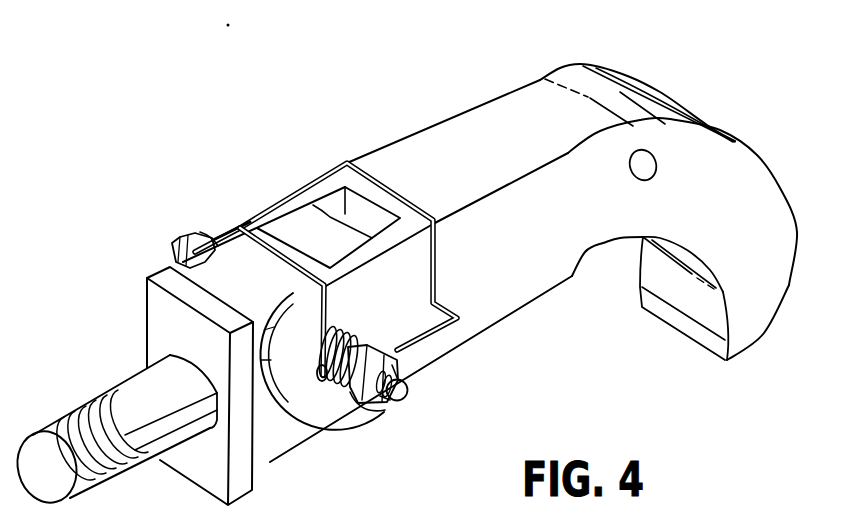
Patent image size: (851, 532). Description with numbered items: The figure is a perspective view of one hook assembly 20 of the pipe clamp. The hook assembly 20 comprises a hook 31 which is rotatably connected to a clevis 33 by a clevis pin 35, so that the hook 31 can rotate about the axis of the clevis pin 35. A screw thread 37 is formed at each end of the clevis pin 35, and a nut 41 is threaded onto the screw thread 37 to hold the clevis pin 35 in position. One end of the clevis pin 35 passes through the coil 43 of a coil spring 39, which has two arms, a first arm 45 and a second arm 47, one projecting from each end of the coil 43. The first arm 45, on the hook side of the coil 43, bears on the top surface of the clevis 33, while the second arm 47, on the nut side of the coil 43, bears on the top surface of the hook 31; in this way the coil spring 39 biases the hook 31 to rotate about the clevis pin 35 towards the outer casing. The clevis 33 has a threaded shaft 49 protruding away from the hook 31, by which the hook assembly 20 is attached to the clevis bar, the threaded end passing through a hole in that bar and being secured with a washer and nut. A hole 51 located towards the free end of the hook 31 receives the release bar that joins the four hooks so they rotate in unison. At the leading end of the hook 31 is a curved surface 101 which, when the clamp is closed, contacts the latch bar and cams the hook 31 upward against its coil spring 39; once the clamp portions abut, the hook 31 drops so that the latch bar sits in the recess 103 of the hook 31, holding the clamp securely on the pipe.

The hook assembly 20 is at (448, 105).
The hook 31 is at (579, 70).
The clevis 33 is at (283, 452).
The clevis pin 35 is at (380, 402).
The screw thread 37 is at (170, 244).
The coil spring 39 is at (368, 325).
The nut 41 is at (205, 234).
The coil 43 is at (320, 368).
The first arm 45 is at (247, 228).
The second arm 47 is at (349, 164).
The threaded shaft 49 is at (82, 412).
The hole 51 is at (634, 168).
The curved surface 101 is at (770, 328).
The recess 103 is at (683, 326).